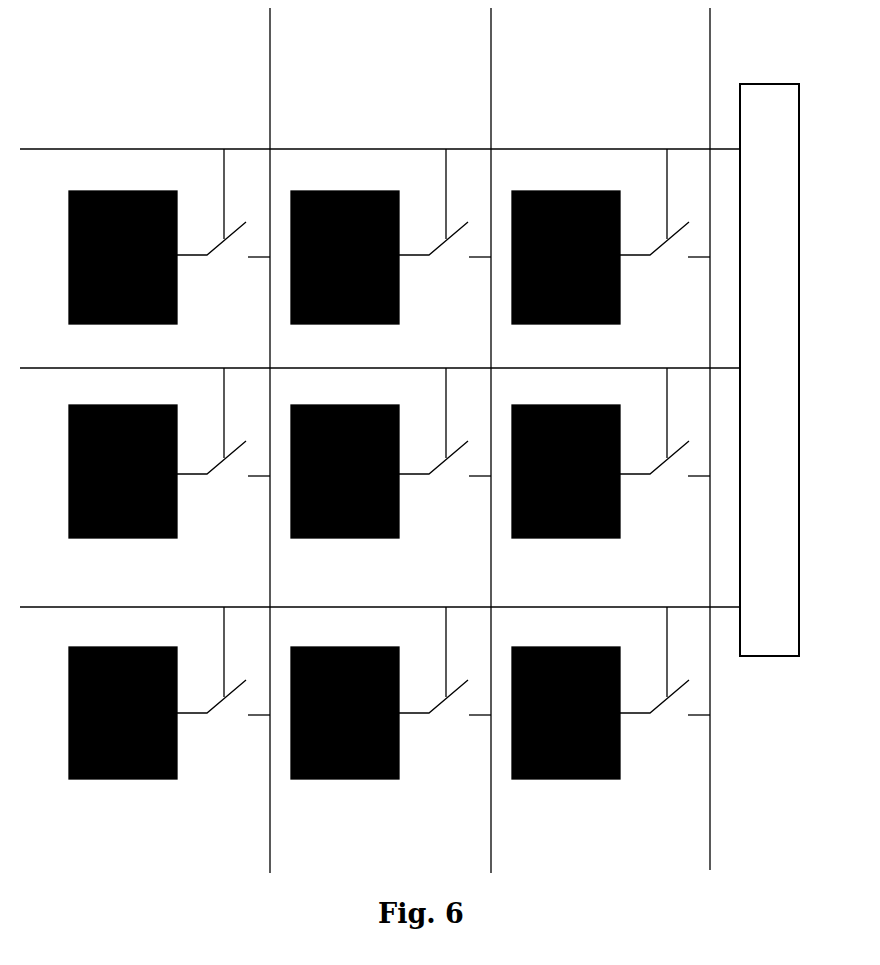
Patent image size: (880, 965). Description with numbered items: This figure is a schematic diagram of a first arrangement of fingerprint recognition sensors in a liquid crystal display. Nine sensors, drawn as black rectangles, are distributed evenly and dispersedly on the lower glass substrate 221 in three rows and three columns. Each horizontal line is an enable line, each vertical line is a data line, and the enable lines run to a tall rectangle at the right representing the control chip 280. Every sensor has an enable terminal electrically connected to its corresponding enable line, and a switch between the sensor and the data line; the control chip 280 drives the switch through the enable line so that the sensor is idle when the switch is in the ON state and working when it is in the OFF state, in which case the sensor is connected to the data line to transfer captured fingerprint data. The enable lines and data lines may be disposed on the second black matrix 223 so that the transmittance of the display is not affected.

The control chip 280 is at (779, 371).
The lower glass substrate 221 is at (135, 827).
The second black matrix 223 is at (682, 544).